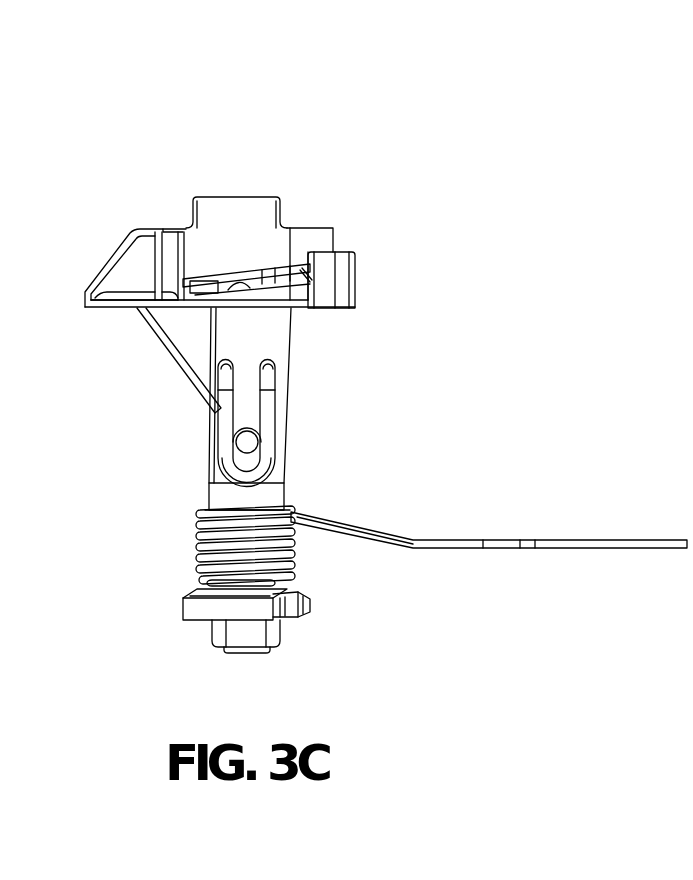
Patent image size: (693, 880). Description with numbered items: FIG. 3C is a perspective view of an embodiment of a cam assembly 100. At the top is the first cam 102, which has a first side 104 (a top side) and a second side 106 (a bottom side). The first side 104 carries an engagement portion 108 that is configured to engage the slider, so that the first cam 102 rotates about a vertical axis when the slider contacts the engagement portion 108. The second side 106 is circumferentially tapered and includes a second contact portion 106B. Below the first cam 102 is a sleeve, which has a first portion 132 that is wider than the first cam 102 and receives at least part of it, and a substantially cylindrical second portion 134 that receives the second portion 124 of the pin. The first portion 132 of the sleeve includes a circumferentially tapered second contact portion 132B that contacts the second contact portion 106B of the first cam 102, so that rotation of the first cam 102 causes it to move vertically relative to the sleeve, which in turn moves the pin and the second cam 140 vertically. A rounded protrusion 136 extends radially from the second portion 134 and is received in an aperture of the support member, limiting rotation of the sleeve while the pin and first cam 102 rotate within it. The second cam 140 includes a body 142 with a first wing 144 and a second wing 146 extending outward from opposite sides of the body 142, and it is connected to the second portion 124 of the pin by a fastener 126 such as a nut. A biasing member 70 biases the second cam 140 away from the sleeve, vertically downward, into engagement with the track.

The cam assembly 100 is at (244, 122).
The first cam 102 is at (184, 182).
The first side 104 is at (327, 212).
The second side 106 is at (298, 290).
The second contact portion 106B is at (222, 302).
The engagement portion 108 is at (253, 196).
The second portion of the pin 124 is at (240, 470).
The fastener 126 is at (215, 632).
The first portion of the sleeve 132 is at (362, 279).
The second contact portion of the sleeve 132B is at (238, 285).
The second portion of the sleeve 134 is at (300, 414).
The protrusion 136 is at (247, 443).
The second cam 140 is at (189, 585).
The body 142 is at (290, 613).
The first wing 144 is at (200, 608).
The second wing 146 is at (310, 607).
The biasing member 70 is at (289, 542).